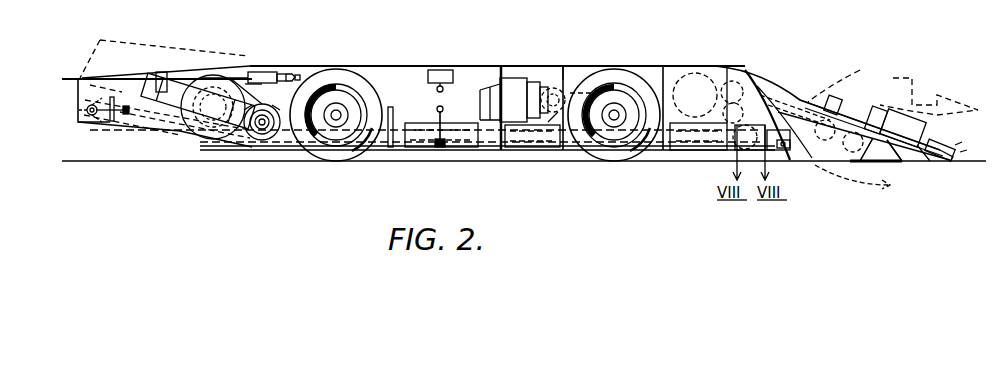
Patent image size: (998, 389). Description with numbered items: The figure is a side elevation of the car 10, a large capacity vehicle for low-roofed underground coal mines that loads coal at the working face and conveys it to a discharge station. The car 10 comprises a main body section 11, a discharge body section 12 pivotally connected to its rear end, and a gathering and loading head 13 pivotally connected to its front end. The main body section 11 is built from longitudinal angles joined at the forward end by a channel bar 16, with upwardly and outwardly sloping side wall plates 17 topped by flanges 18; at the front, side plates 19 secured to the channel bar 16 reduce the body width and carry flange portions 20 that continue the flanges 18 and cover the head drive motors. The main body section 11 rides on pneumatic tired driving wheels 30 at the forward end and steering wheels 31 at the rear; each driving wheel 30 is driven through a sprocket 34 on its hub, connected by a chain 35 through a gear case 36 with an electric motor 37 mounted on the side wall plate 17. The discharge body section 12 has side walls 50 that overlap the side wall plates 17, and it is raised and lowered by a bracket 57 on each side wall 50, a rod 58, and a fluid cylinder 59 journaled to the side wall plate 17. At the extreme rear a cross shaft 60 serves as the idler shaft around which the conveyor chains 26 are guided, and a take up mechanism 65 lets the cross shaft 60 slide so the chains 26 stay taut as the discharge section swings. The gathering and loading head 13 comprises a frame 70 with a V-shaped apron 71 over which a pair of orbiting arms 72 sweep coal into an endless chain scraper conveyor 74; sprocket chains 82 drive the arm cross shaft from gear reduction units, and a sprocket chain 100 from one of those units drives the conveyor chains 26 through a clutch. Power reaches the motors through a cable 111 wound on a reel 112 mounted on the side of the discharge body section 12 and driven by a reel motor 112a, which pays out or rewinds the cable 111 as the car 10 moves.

The car 10 is at (575, 63).
The main body section 11 is at (416, 66).
The discharge body section 12 is at (157, 68).
The gathering and loading head 13 is at (790, 96).
The channel bar 16 is at (782, 150).
The side wall plates 17 is at (456, 80).
The flanges 18 is at (578, 66).
The side plates 19 is at (672, 76).
The flange portions 20 is at (718, 70).
The conveyor chains 26 is at (150, 130).
The driving wheels 30 is at (618, 152).
The steering wheels 31 is at (330, 150).
The sprocket 34 is at (622, 92).
The chain 35 is at (560, 112).
The gear case 36 is at (548, 90).
The electric motor 37 is at (514, 78).
The side walls 50 is at (78, 96).
The bracket 57 is at (196, 82).
The rod 58 is at (252, 84).
The cylinder 59 is at (274, 78).
The cross shaft 60 is at (90, 116).
The take up mechanism 65 is at (112, 122).
The frame 70 is at (832, 92).
The apron 71 is at (893, 152).
The gathering arms 72 is at (938, 156).
The endless chain scraper conveyor 74 is at (860, 64).
The sprocket chains 82 is at (800, 96).
The sprocket chain 100 is at (744, 90).
The cable 111 is at (66, 78).
The reel 112 is at (206, 138).
The reel motor 112a is at (284, 138).